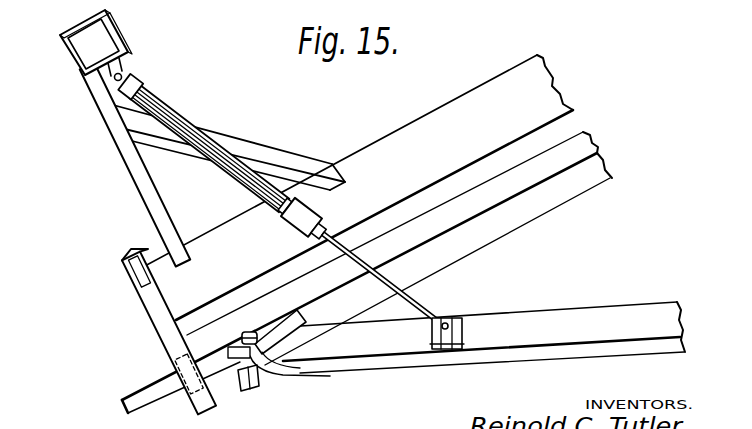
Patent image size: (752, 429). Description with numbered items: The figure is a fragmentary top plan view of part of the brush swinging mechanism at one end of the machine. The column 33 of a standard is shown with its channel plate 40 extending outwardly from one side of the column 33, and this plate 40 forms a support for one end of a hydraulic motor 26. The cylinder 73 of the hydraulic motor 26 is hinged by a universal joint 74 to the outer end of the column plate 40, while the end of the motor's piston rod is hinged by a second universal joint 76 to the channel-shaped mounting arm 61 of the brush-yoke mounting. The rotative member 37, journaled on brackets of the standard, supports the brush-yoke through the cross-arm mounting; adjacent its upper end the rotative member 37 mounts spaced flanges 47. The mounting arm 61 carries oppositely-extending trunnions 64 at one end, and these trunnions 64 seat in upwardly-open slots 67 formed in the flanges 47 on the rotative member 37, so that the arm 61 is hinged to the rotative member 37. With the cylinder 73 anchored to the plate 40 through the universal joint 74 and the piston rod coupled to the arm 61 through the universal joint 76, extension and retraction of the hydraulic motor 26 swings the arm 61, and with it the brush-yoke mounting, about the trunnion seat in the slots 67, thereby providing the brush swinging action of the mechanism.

The hydraulic motor 26 is at (222, 142).
The column 33 is at (423, 164).
The rotative member 37 is at (507, 222).
The channel plate 40 is at (110, 129).
The spaced flanges 47 is at (262, 382).
The channel-shaped arm 61 is at (484, 337).
The trunnions 64 is at (298, 366).
The upwardly-open slots 67 is at (243, 391).
The cylinder 73 is at (257, 182).
The universal joint 74 is at (128, 72).
The universal joint 76 is at (446, 318).